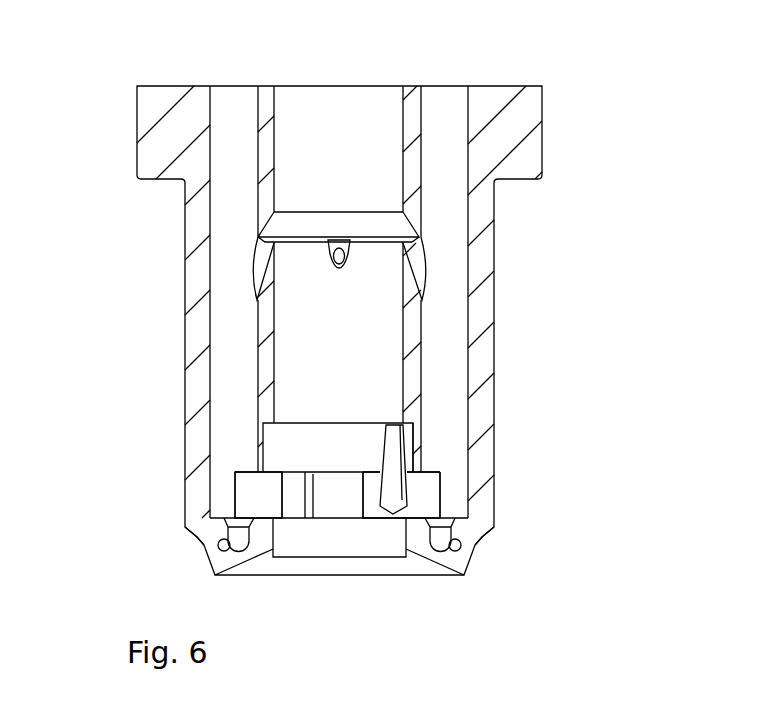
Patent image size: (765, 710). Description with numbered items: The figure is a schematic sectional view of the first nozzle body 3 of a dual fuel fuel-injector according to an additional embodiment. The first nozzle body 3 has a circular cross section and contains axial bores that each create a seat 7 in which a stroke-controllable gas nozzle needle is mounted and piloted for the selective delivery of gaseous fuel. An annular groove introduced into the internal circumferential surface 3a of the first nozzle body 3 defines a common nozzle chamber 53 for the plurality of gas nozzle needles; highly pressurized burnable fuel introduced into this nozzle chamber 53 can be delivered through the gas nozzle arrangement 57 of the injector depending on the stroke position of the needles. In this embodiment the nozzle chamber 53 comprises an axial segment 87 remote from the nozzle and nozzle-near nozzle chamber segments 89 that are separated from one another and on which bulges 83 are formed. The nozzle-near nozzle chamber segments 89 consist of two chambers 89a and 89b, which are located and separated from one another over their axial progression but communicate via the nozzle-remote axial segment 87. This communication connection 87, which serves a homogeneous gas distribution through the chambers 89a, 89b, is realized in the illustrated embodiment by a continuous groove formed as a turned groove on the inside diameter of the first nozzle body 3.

The first nozzle body 3 is at (165, 145).
The internal circumferential surface 3a is at (275, 322).
The seat 7 is at (231, 103).
The nozzle chamber 53 is at (357, 435).
The gas nozzle arrangement 57 is at (458, 544).
The bulge 83 is at (425, 507).
The axial segment 87 is at (334, 448).
The nozzle chamber segment 89 is at (425, 490).
The chamber 89a is at (262, 483).
The chamber 89b is at (418, 488).